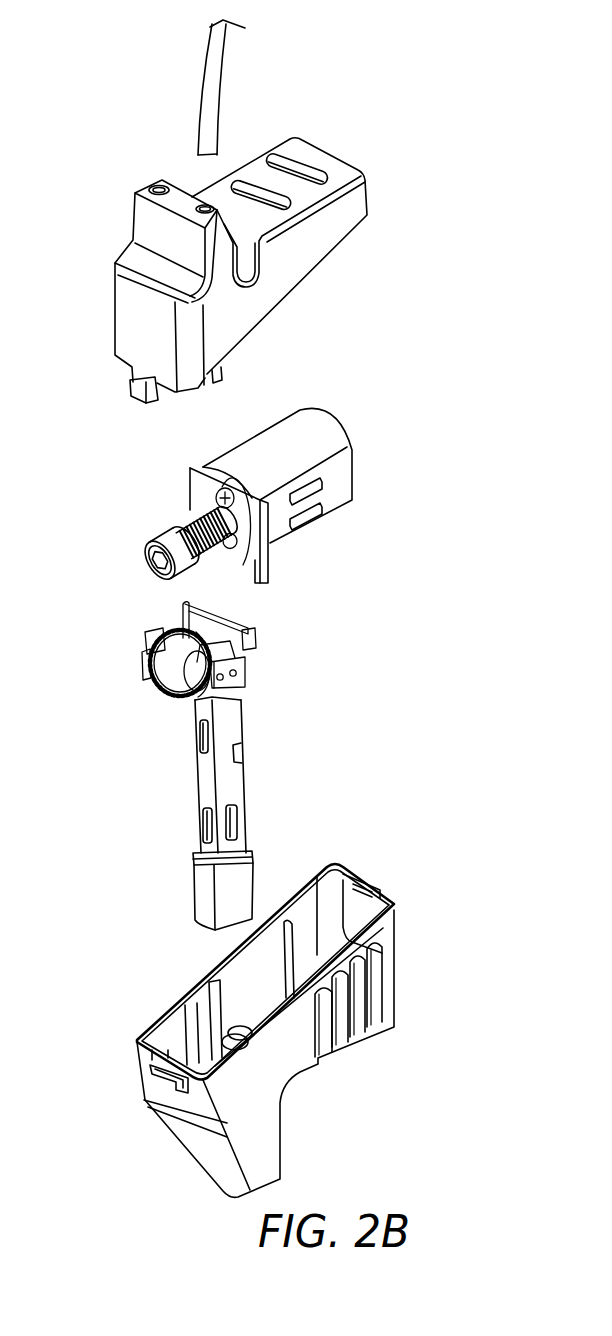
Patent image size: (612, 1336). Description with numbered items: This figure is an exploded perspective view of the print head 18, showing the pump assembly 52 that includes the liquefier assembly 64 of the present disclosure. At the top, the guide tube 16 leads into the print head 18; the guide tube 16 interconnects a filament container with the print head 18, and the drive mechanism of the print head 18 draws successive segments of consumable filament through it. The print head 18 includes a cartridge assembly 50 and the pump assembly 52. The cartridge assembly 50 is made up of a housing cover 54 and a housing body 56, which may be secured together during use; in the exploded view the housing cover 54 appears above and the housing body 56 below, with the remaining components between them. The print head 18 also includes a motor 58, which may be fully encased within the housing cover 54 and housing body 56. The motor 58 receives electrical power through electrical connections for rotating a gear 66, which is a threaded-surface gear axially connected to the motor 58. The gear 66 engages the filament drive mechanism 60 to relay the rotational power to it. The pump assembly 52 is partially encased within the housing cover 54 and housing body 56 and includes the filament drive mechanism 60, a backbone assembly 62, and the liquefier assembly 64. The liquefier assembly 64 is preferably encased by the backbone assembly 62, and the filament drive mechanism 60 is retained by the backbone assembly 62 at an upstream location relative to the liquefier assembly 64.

The guide tube 16 is at (222, 60).
The print head 18 is at (350, 111).
The cartridge assembly 50 is at (98, 1117).
The pump assembly 52 is at (130, 786).
The housing cover 54 is at (328, 238).
The housing body 56 is at (198, 1162).
The motor 58 is at (317, 427).
The filament drive mechanism 60 is at (133, 626).
The backbone assembly 62 is at (268, 768).
The liquefier assembly 64 is at (247, 822).
The gear 66 is at (163, 527).